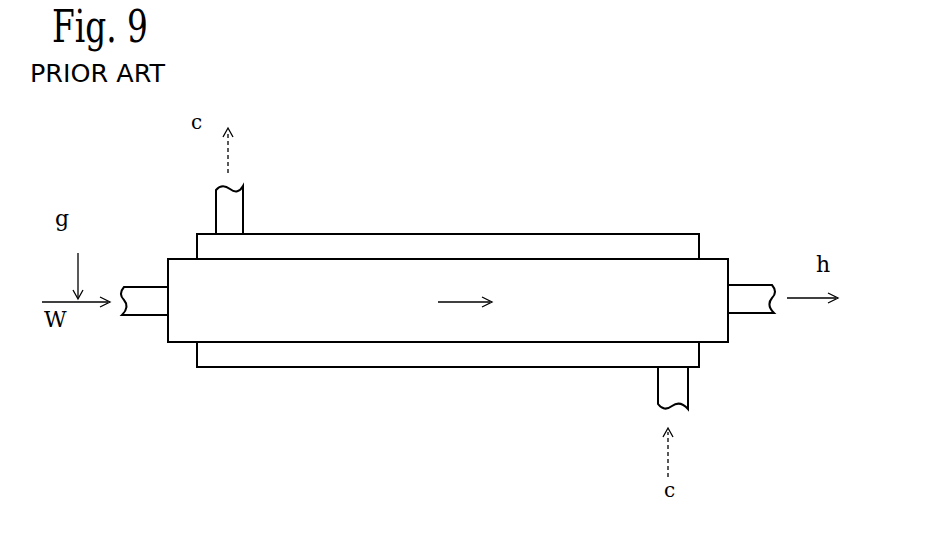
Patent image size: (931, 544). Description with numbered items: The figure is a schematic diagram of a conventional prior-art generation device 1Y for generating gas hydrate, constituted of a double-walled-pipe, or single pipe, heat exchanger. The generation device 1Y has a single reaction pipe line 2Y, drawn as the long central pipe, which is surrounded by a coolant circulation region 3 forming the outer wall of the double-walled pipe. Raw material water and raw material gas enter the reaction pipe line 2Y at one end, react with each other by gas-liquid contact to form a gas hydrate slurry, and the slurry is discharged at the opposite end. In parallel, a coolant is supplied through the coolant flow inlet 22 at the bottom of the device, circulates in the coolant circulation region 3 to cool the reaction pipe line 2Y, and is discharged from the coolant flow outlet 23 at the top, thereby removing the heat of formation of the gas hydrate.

The generation device 1Y is at (432, 170).
The reaction pipe line 2Y is at (448, 330).
The coolant circulation region 3 is at (644, 244).
The coolant flow inlet 22 is at (680, 390).
The coolant flow outlet 23 is at (236, 215).